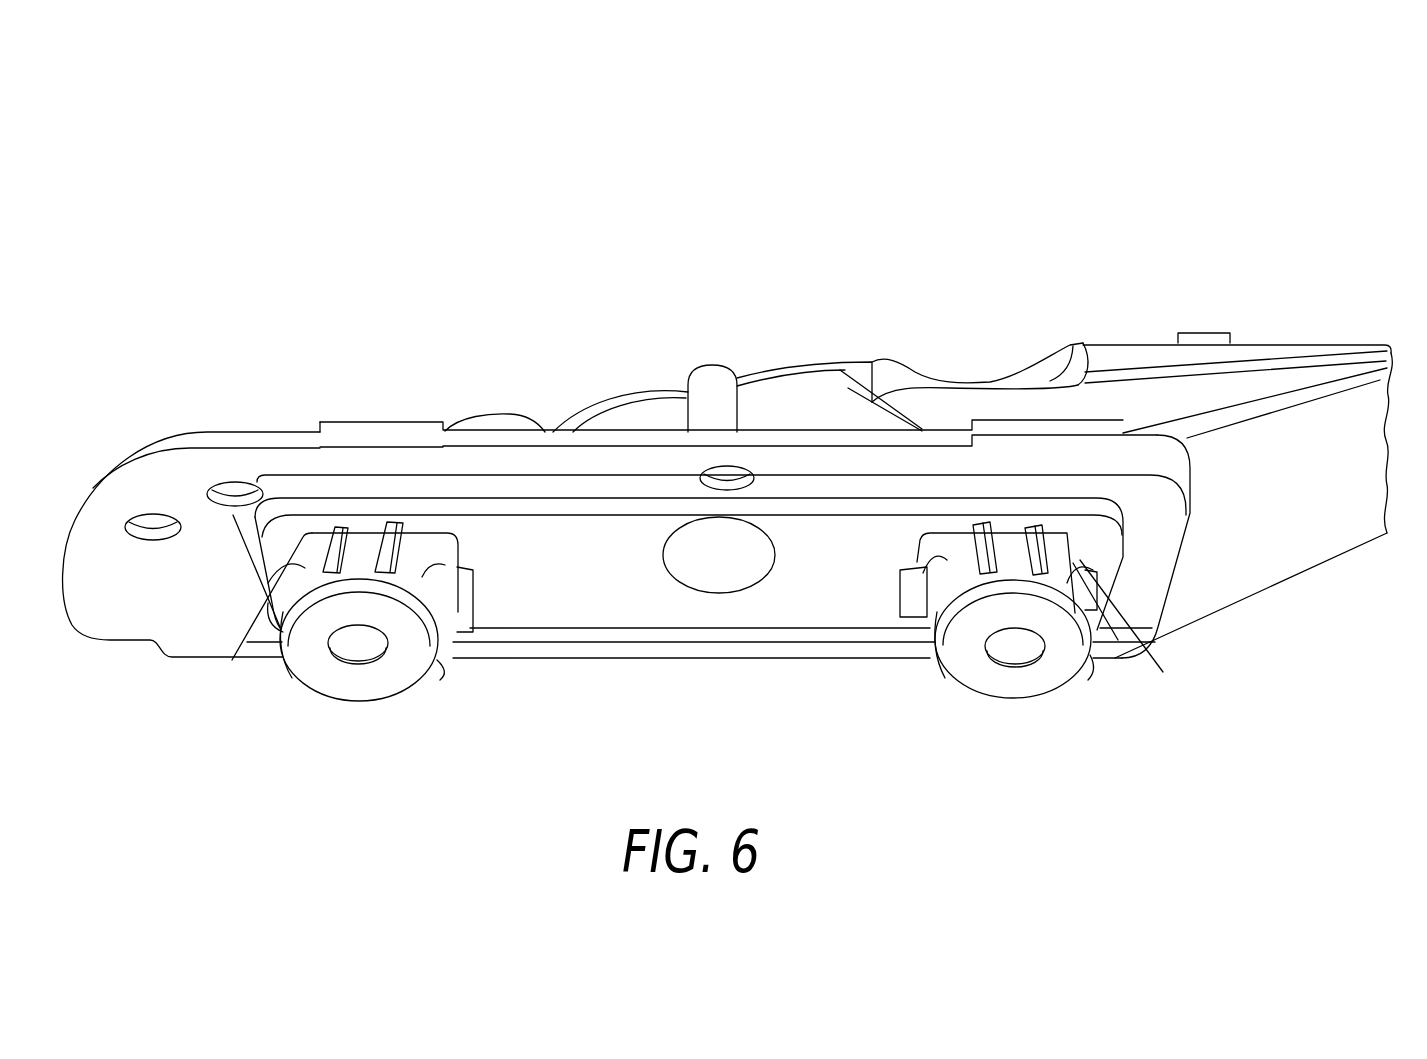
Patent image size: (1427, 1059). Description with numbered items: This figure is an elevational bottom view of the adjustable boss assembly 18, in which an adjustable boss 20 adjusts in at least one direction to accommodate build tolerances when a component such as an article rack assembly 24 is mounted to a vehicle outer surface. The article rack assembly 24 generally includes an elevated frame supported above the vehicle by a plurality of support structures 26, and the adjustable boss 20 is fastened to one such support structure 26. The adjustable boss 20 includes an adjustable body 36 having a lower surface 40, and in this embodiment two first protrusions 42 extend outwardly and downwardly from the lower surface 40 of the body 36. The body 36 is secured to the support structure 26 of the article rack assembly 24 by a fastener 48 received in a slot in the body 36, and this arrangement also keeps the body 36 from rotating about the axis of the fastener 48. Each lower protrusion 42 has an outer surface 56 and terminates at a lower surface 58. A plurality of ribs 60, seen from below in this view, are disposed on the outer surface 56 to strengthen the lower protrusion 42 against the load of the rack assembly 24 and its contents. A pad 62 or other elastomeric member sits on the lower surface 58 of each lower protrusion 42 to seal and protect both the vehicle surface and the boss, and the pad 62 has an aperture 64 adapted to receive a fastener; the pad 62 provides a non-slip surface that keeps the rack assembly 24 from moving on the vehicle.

The adjustable boss assembly 18 is at (1228, 130).
The adjustable boss 20 is at (527, 607).
The article rack assembly 24 is at (1262, 342).
The support structure 26 is at (1265, 568).
The adjustable body 36 is at (825, 607).
The lower surface 40 is at (657, 600).
The first protrusion 42 is at (232, 660).
The fastener 48 is at (728, 573).
The outer surface 56 is at (440, 580).
The lower surface 58 is at (440, 668).
The ribs 60 is at (390, 527).
The pad 62 is at (400, 677).
The aperture 64 is at (362, 663).